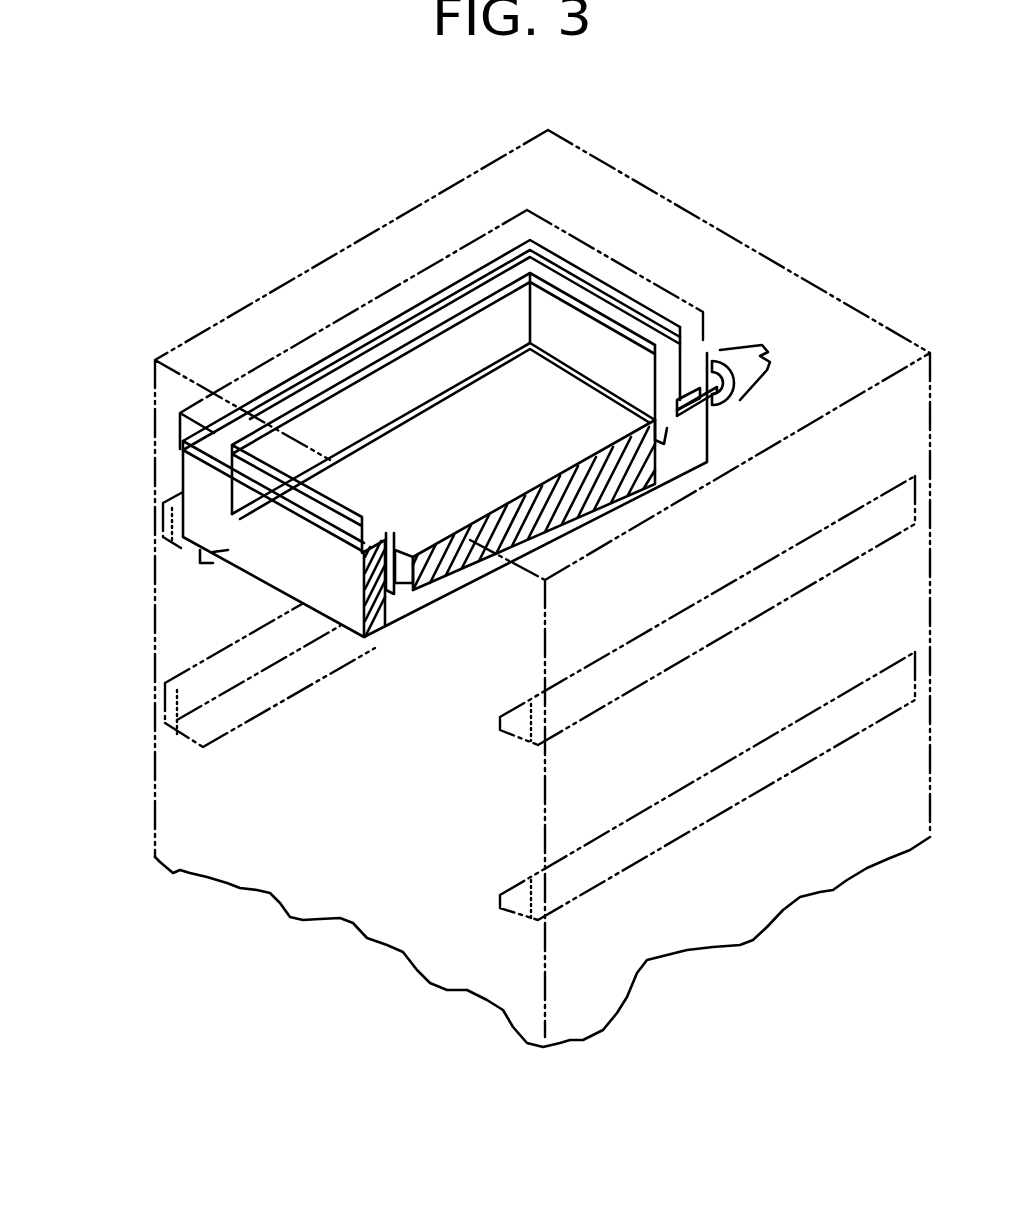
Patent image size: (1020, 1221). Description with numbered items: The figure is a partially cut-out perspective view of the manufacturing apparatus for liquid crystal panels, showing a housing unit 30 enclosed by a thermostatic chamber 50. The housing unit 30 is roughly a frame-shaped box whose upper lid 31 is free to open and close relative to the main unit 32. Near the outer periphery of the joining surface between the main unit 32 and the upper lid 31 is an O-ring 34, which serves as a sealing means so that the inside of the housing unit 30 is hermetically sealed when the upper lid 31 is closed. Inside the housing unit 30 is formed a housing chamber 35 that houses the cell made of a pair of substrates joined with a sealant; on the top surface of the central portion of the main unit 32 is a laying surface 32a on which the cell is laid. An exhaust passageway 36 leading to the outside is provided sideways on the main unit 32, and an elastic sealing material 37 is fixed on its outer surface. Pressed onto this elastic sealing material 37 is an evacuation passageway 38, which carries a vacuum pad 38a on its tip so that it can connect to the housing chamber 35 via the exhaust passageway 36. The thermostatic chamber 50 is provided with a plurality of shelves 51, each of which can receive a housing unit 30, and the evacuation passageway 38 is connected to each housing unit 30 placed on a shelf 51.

The housing unit 30 is at (233, 578).
The upper lid 31 is at (311, 342).
The main unit 32 is at (215, 553).
The laying surface 32a is at (533, 367).
The O-ring 34 is at (196, 447).
The housing chamber 35 is at (477, 392).
The exhaust passageway 36 is at (682, 405).
The elastic sealing material 37 is at (710, 410).
The evacuation passageway 38 is at (745, 355).
The vacuum pad 38a is at (745, 398).
The thermostatic chamber 50 is at (697, 215).
The shelf 51 is at (165, 515).